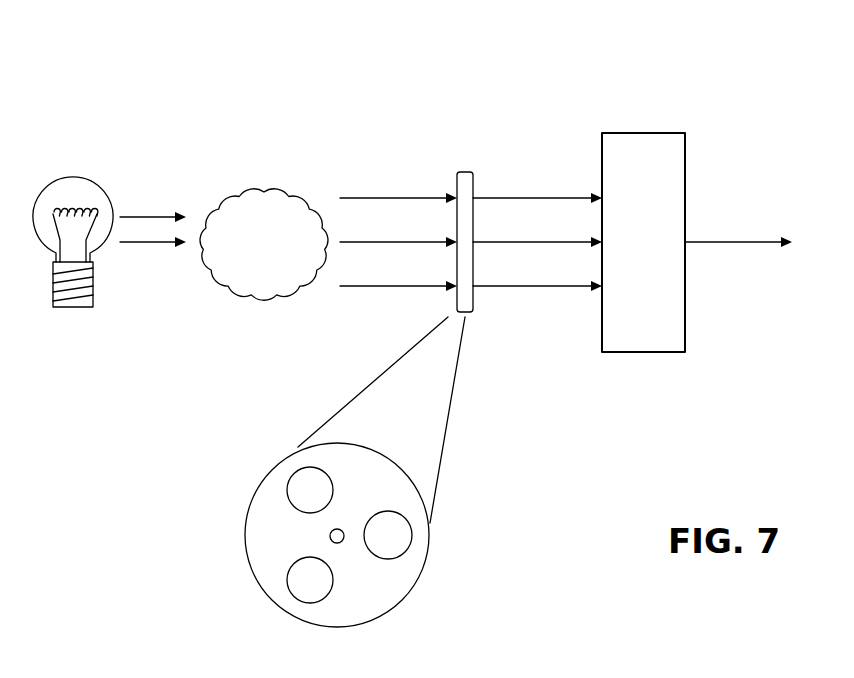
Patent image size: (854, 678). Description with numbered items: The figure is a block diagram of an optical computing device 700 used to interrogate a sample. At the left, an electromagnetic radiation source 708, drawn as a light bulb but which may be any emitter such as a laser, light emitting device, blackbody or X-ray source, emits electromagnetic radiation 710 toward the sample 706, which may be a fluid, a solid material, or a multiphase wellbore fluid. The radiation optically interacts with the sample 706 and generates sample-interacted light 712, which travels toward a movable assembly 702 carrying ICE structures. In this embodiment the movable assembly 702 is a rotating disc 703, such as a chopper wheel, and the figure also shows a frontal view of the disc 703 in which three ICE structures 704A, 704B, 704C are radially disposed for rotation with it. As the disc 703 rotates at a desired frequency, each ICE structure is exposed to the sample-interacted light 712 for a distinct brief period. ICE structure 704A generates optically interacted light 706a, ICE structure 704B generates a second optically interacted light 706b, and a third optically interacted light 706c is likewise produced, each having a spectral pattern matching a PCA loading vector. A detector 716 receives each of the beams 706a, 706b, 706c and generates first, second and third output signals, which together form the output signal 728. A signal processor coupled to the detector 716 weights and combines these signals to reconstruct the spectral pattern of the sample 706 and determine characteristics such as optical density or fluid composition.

The optical computing device 700 is at (234, 64).
The movable assembly 702 is at (462, 170).
The rotating disc 703 is at (478, 464).
The ICE structure 704A is at (287, 487).
The ICE structure 704B is at (287, 580).
The ICE structure 704C is at (407, 550).
The sample 706 is at (290, 255).
The optically interacted light 706a is at (518, 197).
The second optically interacted light 706b is at (552, 241).
The third optically interacted light 706c is at (558, 287).
The electromagnetic radiation source 708 is at (77, 182).
The electromagnetic radiation 710 is at (143, 216).
The sample-interacted light 712 is at (362, 196).
The detector 716 is at (672, 258).
The output signal 728 is at (730, 241).